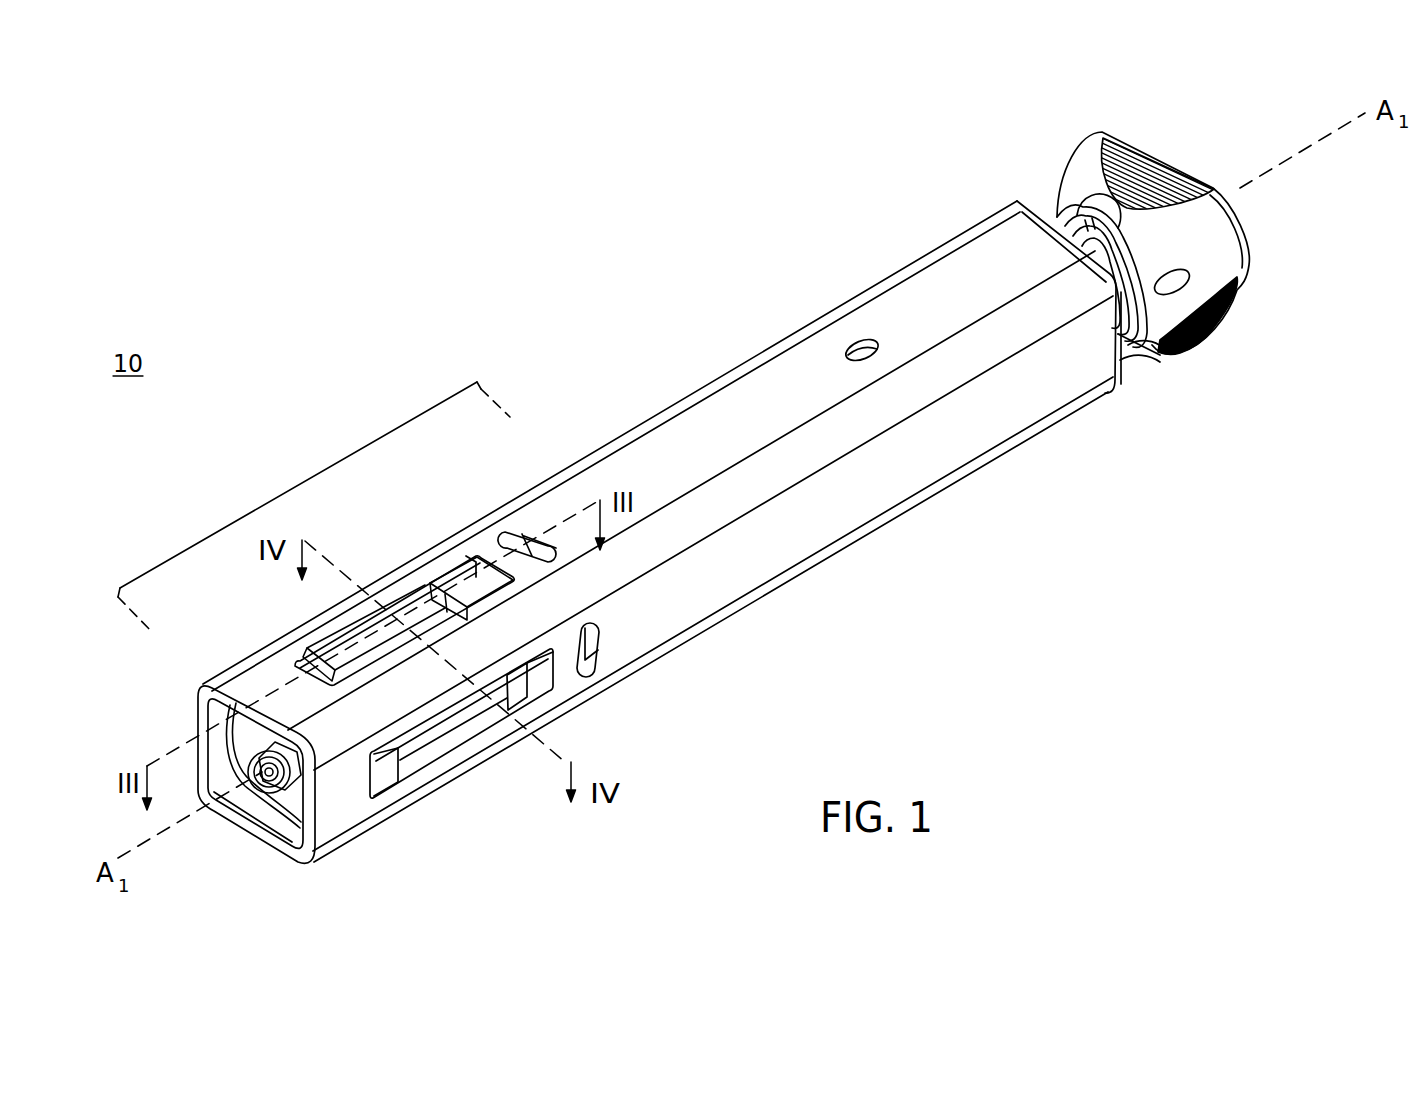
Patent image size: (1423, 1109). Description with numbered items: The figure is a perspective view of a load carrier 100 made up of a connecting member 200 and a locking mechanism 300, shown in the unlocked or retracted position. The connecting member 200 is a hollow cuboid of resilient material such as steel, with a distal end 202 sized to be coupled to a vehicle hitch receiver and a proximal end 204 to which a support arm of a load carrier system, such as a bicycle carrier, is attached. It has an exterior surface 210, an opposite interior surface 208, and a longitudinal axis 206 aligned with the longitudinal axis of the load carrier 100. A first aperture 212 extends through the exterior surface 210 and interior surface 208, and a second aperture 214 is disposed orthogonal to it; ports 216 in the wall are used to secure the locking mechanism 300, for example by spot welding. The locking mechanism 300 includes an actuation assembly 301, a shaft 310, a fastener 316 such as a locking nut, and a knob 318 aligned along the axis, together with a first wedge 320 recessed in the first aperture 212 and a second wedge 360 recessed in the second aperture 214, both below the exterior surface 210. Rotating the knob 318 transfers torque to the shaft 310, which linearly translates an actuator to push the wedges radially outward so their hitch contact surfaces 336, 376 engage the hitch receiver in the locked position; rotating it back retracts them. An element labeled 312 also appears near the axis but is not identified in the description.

The load carrier 100 is at (784, 222).
The connecting member 200 is at (612, 428).
The distal end 202 is at (294, 856).
The proximal end 204 is at (1025, 206).
The longitudinal axis 206 is at (187, 820).
The interior surface 208 is at (274, 842).
The exterior surface 210 is at (850, 520).
The first aperture 212 is at (471, 566).
The second aperture 214 is at (552, 676).
The ports 216 is at (557, 555).
The locking mechanism 300 is at (414, 583).
The actuation assembly 301 is at (300, 487).
The shaft 310 is at (245, 770).
The axis A1 reference 312 is at (140, 848).
The fastener 316 is at (296, 731).
The knob 318 is at (1226, 262).
The first wedge 320 is at (397, 605).
The hitch contact surface 336 is at (443, 600).
The second wedge 360 is at (418, 756).
The hitch contact surface 376 is at (462, 734).